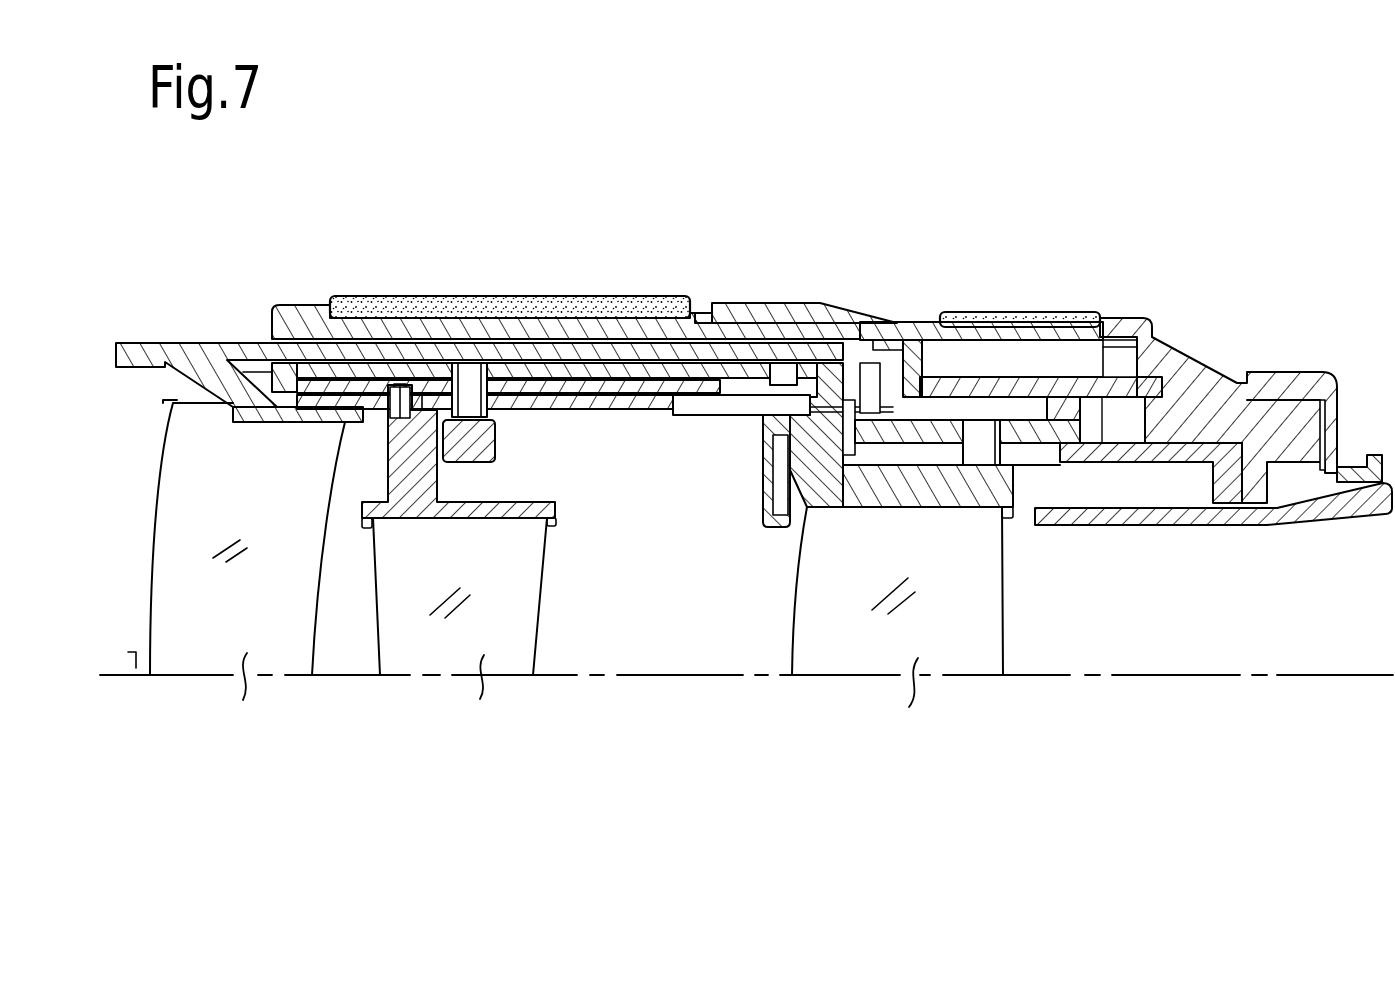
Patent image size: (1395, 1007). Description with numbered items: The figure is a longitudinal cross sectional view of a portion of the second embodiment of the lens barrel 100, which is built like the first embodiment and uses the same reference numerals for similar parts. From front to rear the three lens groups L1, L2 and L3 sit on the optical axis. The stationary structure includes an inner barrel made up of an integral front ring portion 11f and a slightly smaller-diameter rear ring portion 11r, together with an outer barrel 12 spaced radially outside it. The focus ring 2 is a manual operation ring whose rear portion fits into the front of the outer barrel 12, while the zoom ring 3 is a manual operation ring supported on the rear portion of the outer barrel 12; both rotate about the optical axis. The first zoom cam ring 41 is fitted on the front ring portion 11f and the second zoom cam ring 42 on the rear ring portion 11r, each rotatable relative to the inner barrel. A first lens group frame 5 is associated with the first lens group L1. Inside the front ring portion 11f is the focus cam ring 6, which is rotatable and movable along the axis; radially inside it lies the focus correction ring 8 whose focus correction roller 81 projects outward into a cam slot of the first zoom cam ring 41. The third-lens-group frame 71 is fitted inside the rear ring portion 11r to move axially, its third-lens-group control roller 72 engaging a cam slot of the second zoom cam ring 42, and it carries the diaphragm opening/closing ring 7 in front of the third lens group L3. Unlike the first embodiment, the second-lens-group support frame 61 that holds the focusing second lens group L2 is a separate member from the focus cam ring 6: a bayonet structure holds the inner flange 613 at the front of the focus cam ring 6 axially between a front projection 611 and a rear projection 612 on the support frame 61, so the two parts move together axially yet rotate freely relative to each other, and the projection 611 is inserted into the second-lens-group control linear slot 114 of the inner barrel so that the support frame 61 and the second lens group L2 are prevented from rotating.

The lens barrel 100 is at (1036, 147).
The focus ring 2 is at (283, 315).
The zoom ring 3 is at (916, 340).
The first lens group frame 5 is at (162, 343).
The focus cam ring 6 is at (537, 403).
The diaphragm opening/closing ring 7 is at (807, 502).
The focus correction ring 8 is at (490, 455).
The outer barrel 12 is at (765, 312).
The first zoom cam ring 41 is at (383, 375).
The second zoom cam ring 42 is at (1053, 420).
The second-lens-group support frame 61 is at (557, 518).
The front projection 611 is at (347, 413).
The rear projection 612 is at (418, 410).
The inner flange 613 is at (418, 398).
The third-lens-group frame 71 is at (1010, 500).
The third-lens-group control roller 72 is at (983, 437).
The focus correction roller 81 is at (508, 405).
The second-lens-group control linear slot 114 is at (307, 385).
The front ring portion 11f is at (250, 371).
The rear ring portion 11r is at (1182, 455).
The first lens group L1 is at (247, 562).
The second lens group L2 is at (460, 621).
The third lens group L3 is at (897, 617).